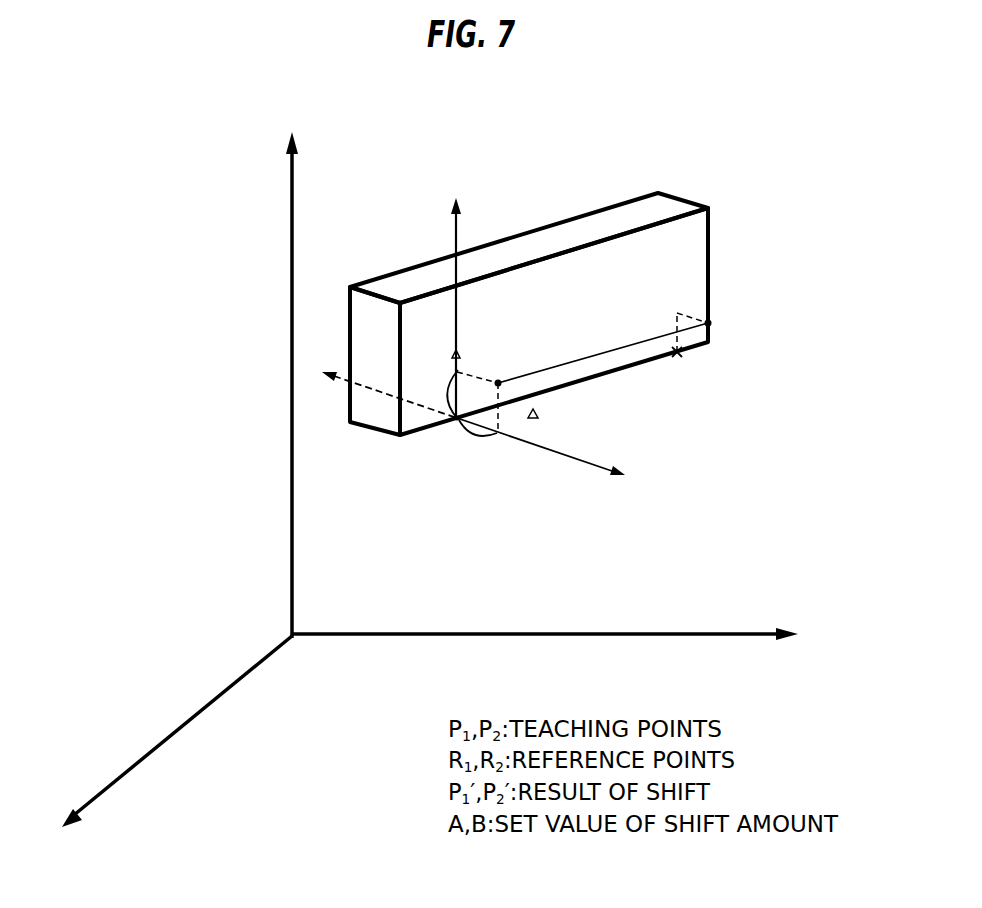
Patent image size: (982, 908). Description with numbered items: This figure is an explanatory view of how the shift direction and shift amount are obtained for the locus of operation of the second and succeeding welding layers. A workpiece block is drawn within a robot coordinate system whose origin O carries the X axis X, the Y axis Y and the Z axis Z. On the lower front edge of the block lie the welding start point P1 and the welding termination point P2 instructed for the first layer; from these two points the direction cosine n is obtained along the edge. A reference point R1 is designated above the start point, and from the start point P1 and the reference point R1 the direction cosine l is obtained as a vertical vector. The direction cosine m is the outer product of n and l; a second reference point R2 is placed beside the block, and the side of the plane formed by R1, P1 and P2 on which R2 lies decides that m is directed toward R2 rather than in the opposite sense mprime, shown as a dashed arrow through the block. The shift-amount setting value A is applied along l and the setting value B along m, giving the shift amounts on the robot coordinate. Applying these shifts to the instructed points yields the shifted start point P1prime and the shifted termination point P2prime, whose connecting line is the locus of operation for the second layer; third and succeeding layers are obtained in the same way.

The welding start point P1 is at (448, 437).
The welding termination point P2 is at (678, 370).
The reference point R1 is at (440, 343).
The reference point R2 is at (549, 424).
The shifted start point P1prime is at (490, 392).
The shifted termination point P2prime is at (712, 332).
The shift-amount setting value A is at (441, 394).
The shift-amount setting value B is at (478, 442).
The direction cosine l is at (484, 185).
The direction cosine m is at (653, 438).
The opposite direction of m mprime is at (344, 328).
The direction cosine n is at (622, 383).
The X axis X is at (168, 744).
The Y axis Y is at (556, 633).
The Z axis Z is at (292, 363).
The origin O is at (305, 659).